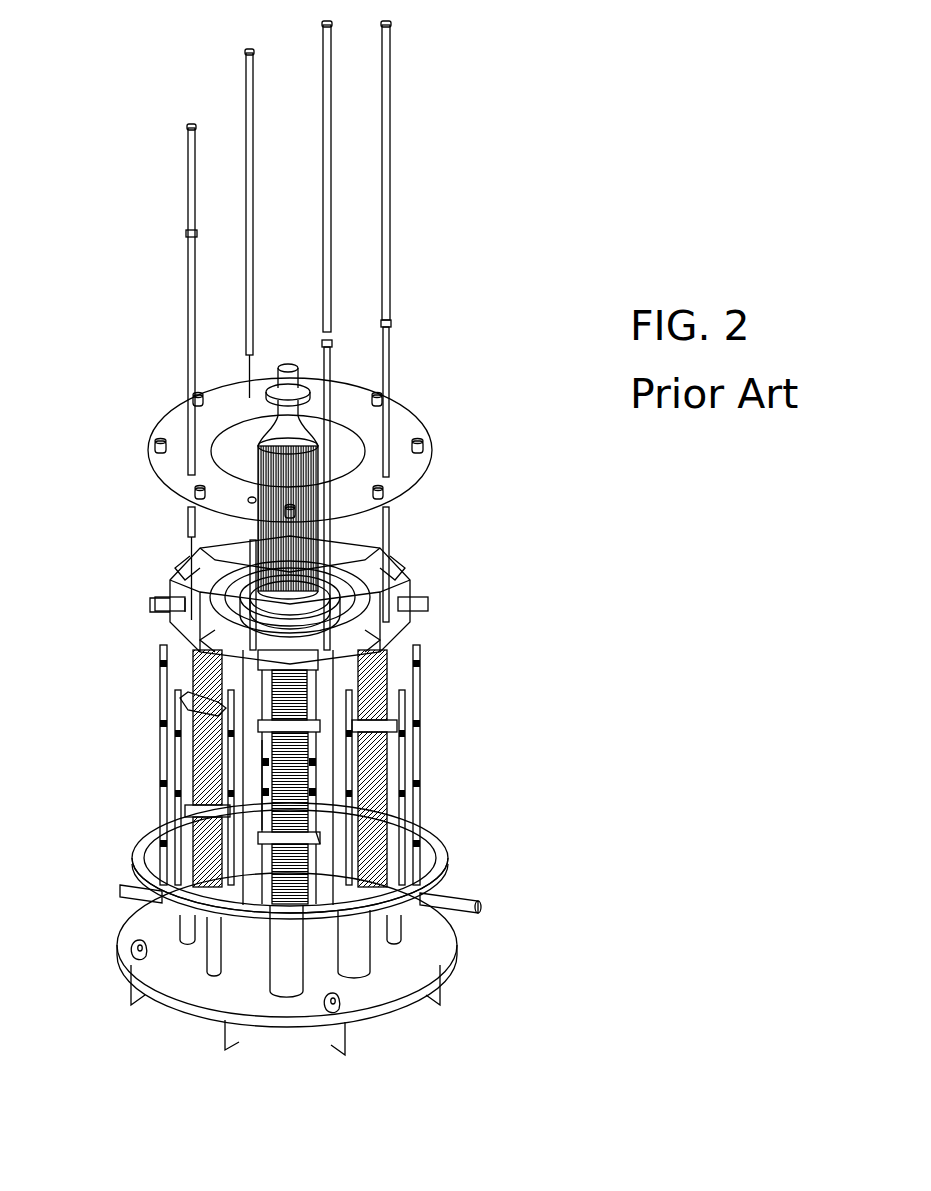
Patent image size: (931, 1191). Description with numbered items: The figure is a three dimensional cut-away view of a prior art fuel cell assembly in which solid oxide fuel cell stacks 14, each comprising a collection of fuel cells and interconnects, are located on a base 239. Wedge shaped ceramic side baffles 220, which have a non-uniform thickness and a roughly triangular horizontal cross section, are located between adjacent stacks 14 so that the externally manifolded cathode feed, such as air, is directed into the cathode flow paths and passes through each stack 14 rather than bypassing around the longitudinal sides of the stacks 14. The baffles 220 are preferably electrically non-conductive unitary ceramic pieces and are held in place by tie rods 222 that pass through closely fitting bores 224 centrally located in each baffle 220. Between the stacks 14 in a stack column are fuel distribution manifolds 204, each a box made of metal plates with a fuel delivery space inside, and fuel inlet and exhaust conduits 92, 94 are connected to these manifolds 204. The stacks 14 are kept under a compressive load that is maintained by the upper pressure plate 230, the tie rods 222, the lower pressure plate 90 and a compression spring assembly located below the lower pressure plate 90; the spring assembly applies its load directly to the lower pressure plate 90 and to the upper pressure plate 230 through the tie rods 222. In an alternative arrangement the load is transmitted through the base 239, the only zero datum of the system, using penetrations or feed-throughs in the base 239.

The solid oxide fuel cell stack 14 is at (308, 692).
The lower pressure plate 90 is at (437, 848).
The fuel inlet conduit 92 is at (262, 818).
The fuel exhaust conduit 94 is at (303, 830).
The fuel distribution manifold 204 is at (260, 730).
The wedge shaped ceramic side baffle 220 is at (405, 625).
The tie rod 222 is at (243, 215).
The bore 224 is at (185, 592).
The upper pressure plate 230 is at (157, 423).
The base 239 is at (128, 930).